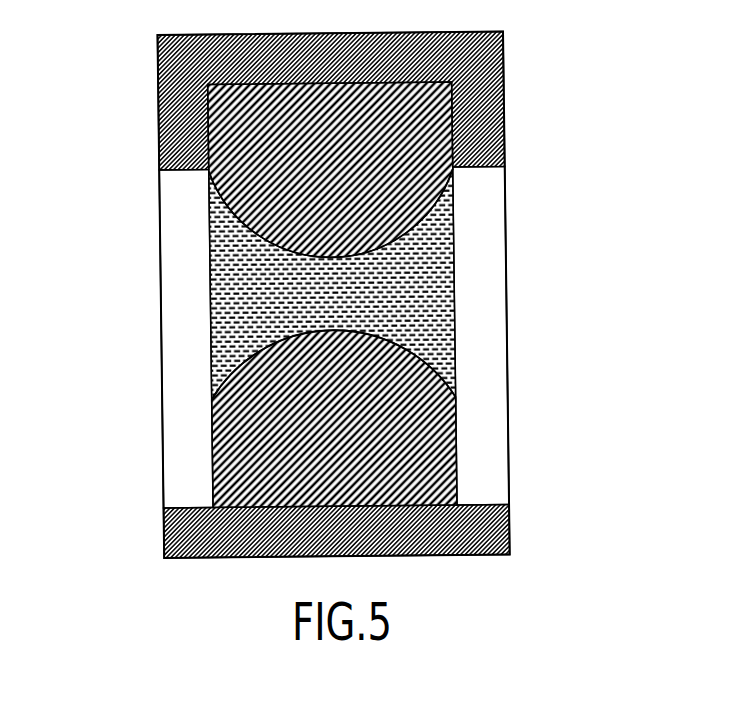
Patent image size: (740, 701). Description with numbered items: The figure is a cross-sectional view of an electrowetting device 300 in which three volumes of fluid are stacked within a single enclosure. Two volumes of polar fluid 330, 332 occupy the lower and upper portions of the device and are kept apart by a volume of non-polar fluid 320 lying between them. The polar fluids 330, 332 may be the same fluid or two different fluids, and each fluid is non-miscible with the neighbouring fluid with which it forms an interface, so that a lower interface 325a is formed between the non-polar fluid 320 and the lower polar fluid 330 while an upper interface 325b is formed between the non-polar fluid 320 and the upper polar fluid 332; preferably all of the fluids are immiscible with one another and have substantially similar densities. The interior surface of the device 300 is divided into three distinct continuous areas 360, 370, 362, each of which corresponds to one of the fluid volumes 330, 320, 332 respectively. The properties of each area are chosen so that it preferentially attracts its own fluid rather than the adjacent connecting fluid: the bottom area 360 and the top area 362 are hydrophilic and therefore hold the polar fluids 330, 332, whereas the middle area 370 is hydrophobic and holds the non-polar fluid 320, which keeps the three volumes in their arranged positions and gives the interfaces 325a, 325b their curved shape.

The electrowetting device 300 is at (535, 495).
The non-polar fluid 320 is at (455, 303).
The interface 325a is at (455, 353).
The interface 325b is at (217, 252).
The polar fluid 330 is at (452, 442).
The polar fluid 332 is at (413, 100).
The area 360 is at (448, 553).
The area 362 is at (502, 135).
The area 370 is at (480, 227).